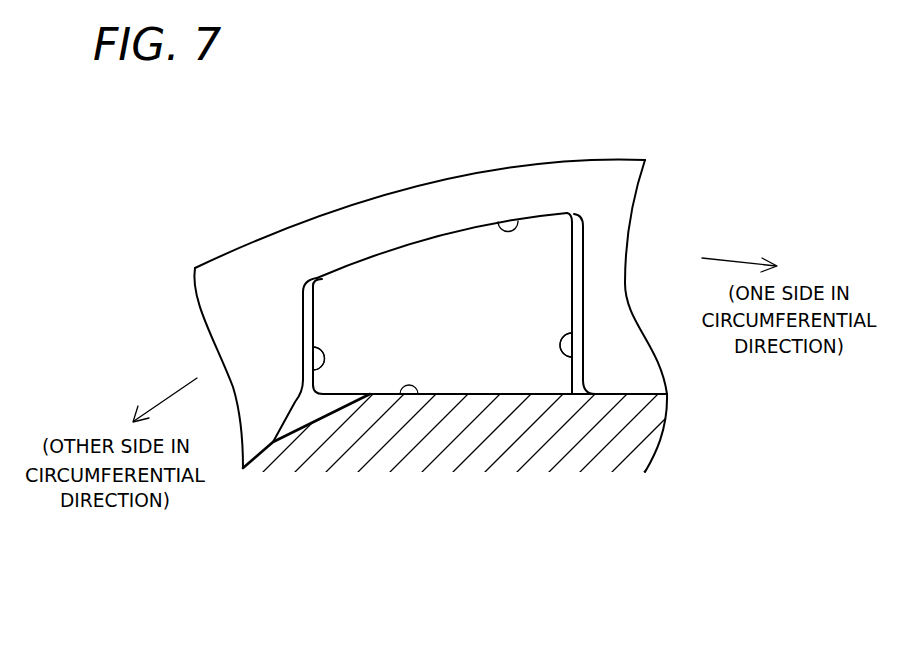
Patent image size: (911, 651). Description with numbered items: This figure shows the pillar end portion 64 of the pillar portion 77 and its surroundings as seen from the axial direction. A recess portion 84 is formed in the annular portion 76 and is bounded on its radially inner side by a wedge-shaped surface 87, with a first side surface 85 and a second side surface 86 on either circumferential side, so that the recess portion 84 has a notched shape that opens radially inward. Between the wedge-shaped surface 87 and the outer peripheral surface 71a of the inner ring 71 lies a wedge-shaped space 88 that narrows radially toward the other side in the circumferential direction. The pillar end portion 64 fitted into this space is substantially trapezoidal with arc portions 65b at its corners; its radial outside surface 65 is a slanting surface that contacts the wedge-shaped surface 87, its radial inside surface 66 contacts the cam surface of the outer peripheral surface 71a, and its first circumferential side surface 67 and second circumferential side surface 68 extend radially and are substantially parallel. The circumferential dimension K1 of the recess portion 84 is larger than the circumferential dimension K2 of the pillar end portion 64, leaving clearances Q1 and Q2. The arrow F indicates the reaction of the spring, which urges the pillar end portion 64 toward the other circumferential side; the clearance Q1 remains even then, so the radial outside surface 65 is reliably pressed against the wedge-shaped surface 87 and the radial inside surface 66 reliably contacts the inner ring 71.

The inner ring 71 is at (285, 457).
The annular portion 76 is at (240, 287).
The radial outside surface 65 is at (440, 235).
The arc portions 65b is at (308, 277).
The wedge-shaped surface 87 is at (517, 222).
The second circumferential side surface 68 is at (308, 312).
The first circumferential side surface 67 is at (573, 253).
The first side surface 85 is at (316, 372).
The clearance Q1 is at (308, 337).
The second side surface 86 is at (580, 363).
The clearance Q2 is at (577, 298).
The outer peripheral surface 71a is at (405, 395).
The recess portion 84 is at (348, 364).
The pillar end portion 64 is at (472, 358).
The radial inside surface 66 is at (442, 394).
The pillar portion 77 is at (503, 395).
The wedge-shaped space 88 is at (545, 362).
The reaction F is at (550, 292).
The circumferential dimension of the recess portion K1 is at (303, 400).
The circumferential dimension of the pillar end portion K2 is at (313, 400).